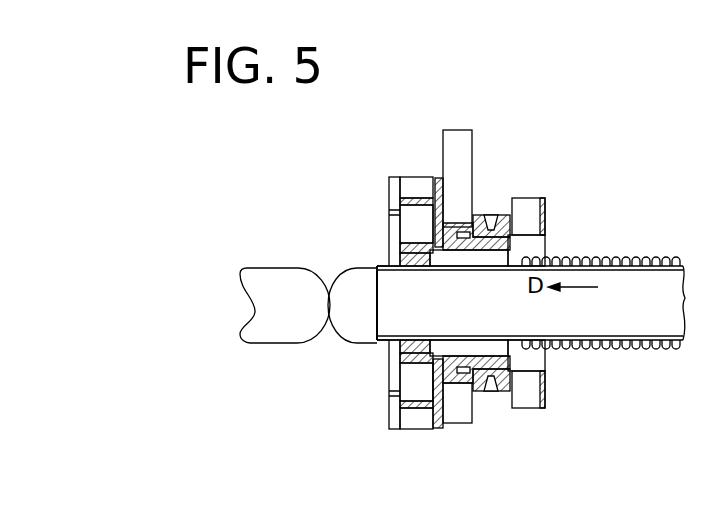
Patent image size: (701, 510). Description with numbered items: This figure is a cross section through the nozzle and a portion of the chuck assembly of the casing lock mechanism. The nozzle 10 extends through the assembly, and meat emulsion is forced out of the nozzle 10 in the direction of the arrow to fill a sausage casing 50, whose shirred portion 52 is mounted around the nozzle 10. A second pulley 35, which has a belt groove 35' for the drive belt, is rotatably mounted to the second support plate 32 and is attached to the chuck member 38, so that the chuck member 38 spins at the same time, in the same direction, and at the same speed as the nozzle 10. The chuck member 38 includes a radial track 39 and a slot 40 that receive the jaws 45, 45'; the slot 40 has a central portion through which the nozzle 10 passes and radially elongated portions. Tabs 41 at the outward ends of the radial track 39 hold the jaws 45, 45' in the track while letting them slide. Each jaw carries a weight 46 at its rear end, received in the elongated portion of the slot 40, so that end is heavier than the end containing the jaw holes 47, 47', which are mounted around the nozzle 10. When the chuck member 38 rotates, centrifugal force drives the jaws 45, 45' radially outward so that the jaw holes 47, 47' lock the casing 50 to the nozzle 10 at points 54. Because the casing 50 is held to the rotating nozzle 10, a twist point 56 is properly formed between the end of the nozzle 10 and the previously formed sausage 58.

The nozzle 10 is at (385, 267).
The second support plate 32 is at (465, 162).
The second pulley 35 is at (547, 282).
The belt groove 35' is at (500, 269).
The chuck member 38 is at (450, 430).
The radial track 39 is at (405, 185).
The slot 40 is at (442, 178).
The tabs 41 is at (395, 197).
The jaw 45 is at (387, 434).
The jaw 45' is at (375, 216).
The weight 46 is at (415, 383).
The jaw hole 47 is at (419, 188).
The jaw hole 47' is at (428, 430).
The sausage casing 50 is at (566, 248).
The shirred portion 52 is at (628, 258).
The points 54 is at (402, 278).
The twist point 56 is at (328, 292).
The previously formed sausage 58 is at (273, 267).